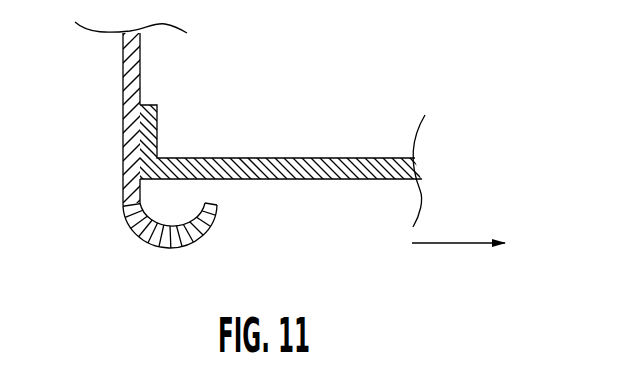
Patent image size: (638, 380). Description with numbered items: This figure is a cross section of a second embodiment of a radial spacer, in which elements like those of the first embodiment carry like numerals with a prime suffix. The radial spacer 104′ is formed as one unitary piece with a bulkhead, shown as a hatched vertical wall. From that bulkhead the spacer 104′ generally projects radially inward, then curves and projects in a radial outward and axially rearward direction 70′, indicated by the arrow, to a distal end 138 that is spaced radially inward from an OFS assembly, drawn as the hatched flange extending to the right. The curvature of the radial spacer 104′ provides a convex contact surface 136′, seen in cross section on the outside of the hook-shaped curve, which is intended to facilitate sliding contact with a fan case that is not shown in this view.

The radial spacer 104′ is at (228, 190).
The convex contact surface 136′ is at (195, 242).
The distal end 138 is at (214, 196).
The radial outward and axially rearward direction 70′ is at (448, 243).